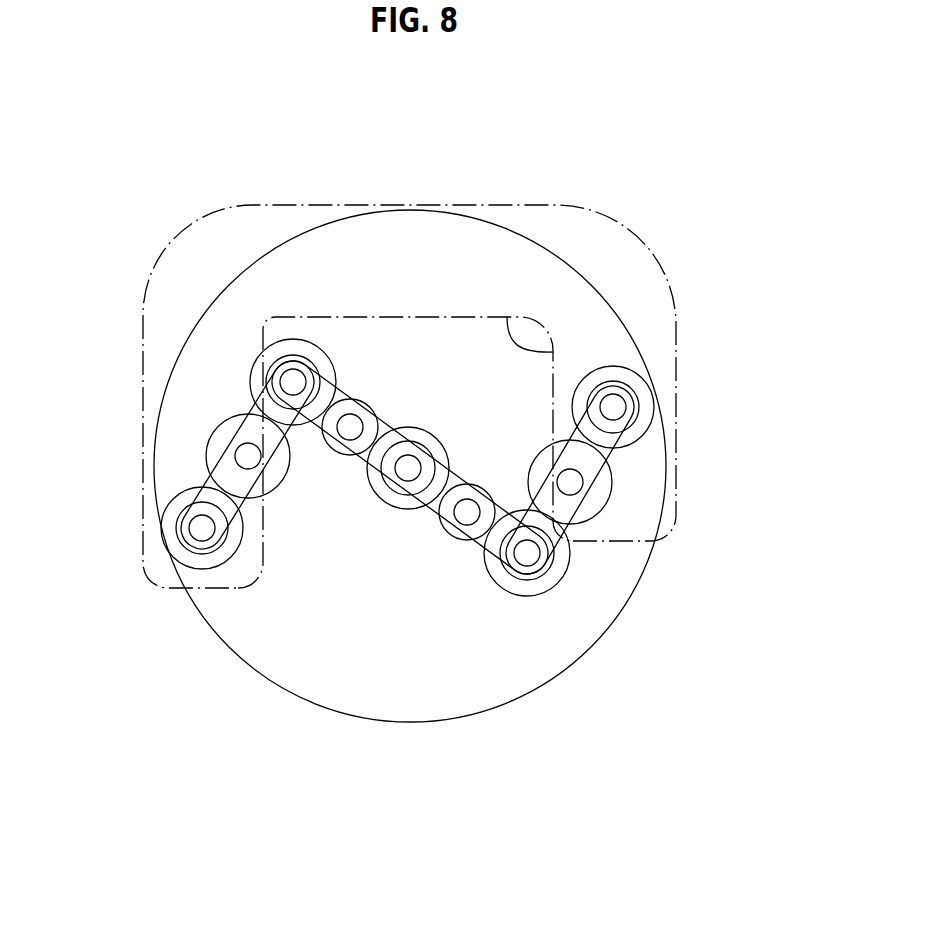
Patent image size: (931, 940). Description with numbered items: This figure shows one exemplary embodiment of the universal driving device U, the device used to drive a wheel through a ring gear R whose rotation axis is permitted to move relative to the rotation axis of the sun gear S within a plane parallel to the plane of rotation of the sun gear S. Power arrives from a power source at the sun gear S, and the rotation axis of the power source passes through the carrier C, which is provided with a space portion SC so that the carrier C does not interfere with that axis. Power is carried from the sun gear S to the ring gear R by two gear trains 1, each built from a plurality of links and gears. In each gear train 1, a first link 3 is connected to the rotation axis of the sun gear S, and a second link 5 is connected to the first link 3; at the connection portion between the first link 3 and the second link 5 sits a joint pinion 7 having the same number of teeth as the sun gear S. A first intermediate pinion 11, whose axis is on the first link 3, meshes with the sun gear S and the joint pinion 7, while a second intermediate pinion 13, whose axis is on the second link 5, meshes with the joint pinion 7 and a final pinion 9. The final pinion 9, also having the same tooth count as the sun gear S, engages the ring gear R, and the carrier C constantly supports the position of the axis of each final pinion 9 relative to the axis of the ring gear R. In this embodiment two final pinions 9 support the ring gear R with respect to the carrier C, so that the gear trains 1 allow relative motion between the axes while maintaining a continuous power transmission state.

The gear train 1 is at (407, 461).
The first link 3 is at (357, 457).
The second link 5 is at (253, 407).
The joint pinion 7 is at (283, 343).
The final pinion 9 is at (175, 521).
The first intermediate pinion 11 is at (357, 417).
The second intermediate pinion 13 is at (215, 446).
The universal driving device U is at (452, 331).
The carrier C is at (632, 230).
The sun gear S is at (430, 440).
The space portion SC is at (563, 350).
The ring gear R is at (203, 320).